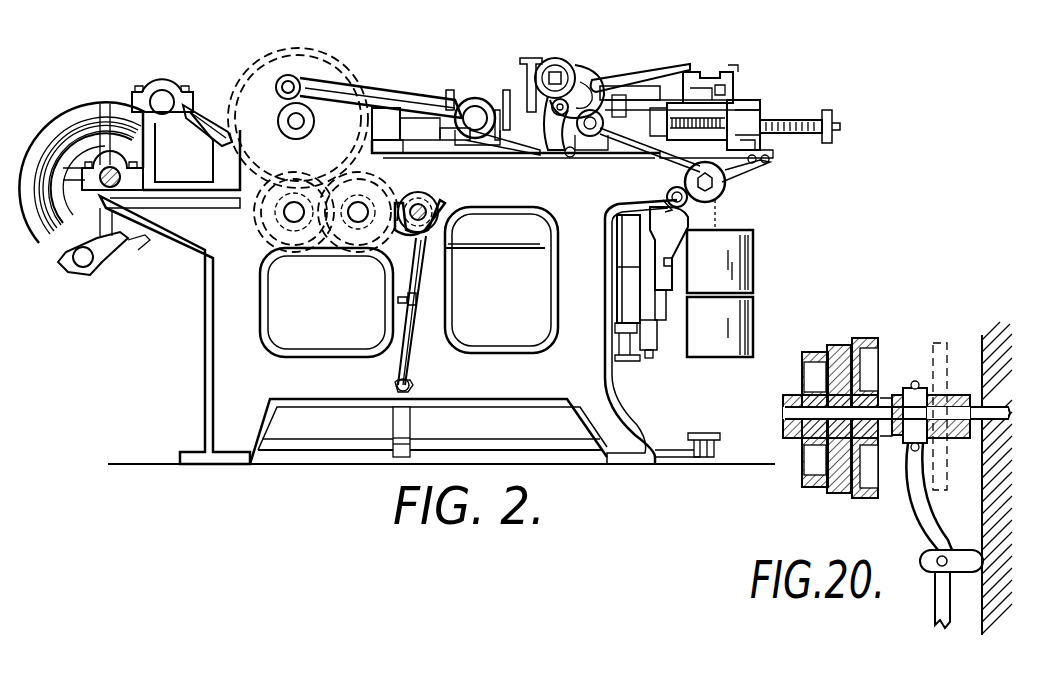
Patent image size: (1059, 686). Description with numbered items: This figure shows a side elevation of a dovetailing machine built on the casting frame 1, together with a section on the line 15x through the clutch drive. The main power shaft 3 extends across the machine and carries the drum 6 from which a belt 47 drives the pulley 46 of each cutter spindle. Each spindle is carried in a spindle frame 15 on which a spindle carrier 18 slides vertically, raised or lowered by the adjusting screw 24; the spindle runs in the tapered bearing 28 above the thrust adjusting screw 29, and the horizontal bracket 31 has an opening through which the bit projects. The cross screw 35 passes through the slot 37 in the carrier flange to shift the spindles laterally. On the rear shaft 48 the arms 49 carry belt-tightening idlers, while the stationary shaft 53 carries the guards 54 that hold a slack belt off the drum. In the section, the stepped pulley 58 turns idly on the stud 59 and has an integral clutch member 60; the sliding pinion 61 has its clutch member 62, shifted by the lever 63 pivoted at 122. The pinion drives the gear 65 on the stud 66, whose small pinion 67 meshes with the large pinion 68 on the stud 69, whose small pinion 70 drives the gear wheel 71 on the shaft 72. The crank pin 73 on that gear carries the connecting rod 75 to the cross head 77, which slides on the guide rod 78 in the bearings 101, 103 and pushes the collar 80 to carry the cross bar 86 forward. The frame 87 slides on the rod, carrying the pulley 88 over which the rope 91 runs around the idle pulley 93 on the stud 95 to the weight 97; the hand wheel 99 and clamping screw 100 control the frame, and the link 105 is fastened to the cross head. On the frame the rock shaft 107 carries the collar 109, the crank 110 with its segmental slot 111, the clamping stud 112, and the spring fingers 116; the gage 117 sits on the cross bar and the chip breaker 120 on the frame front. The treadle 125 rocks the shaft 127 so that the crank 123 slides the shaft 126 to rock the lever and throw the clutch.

In FIG. 2, the frame 1 is at (200, 300).
In FIG. 2, the main power shaft 3 is at (100, 188).
In FIG. 2, the drum 6 is at (105, 160).
In FIG. 2, the spindle frame 15 is at (622, 244).
In FIG. 2, the section line 15x is at (420, 204).
In FIG. 2, the spindle carrier 18 is at (672, 224).
In FIG. 2, the adjusting screw 24 is at (638, 361).
In FIG. 2, the tapered bearing 28 is at (654, 334).
In FIG. 2, the adjusting screw 29 is at (656, 354).
In FIG. 2, the bracket or sectional table 31 is at (668, 104).
In FIG. 2, the screw 35 is at (668, 192).
In FIG. 2, the slot 37 is at (672, 210).
In FIG. 2, the pulley 46 is at (664, 264).
In FIG. 2, the belt 47 is at (504, 247).
In FIG. 2, the shaft 48 is at (162, 98).
In FIG. 2, the arm 49 is at (215, 118).
In FIG. 2, the shaft 53 is at (84, 267).
In FIG. 2, the guard 54 is at (42, 232).
In FIG. 20, the stepped pulley 58 is at (840, 497).
In FIG. 2, the stud 59 is at (425, 212).
In FIG. 20, the stud 59 is at (1008, 410).
In FIG. 20, the clutch member 60 is at (878, 435).
In FIG. 20, the pinion 61 is at (985, 374).
In FIG. 20, the clutch member 62 is at (896, 395).
In FIG. 2, the lever 63 is at (420, 270).
In FIG. 20, the lever 63 is at (940, 589).
In FIG. 2, the gear 65 is at (362, 254).
In FIG. 20, the gear 65 is at (946, 350).
In FIG. 2, the stud 66 is at (355, 222).
In FIG. 2, the small pinion 67 is at (375, 205).
In FIG. 2, the large pinion 68 is at (256, 233).
In FIG. 2, the stud 69 is at (282, 213).
In FIG. 2, the small pinion 70 is at (294, 225).
In FIG. 2, the gear wheel 71 is at (332, 72).
In FIG. 2, the shaft 72 is at (290, 120).
In FIG. 2, the crank pin 73 is at (282, 87).
In FIG. 2, the connecting rod 75 is at (380, 100).
In FIG. 2, the cross head 77 is at (470, 104).
In FIG. 2, the sliding guide rod 78 is at (788, 120).
In FIG. 2, the collar 80 is at (506, 100).
In FIG. 2, the cross bar 86 is at (742, 100).
In FIG. 2, the frame 87 is at (615, 82).
In FIG. 2, the pulley 88 is at (592, 143).
In FIG. 2, the rope or chain 91 is at (650, 153).
In FIG. 2, the idle pulley 93 is at (722, 185).
In FIG. 2, the stud 95 is at (745, 176).
In FIG. 2, the weight 97 is at (756, 268).
In FIG. 2, the hand wheel 99 is at (448, 88).
In FIG. 2, the clamping screw 100 is at (524, 60).
In FIG. 2, the bearing 101 is at (407, 122).
In FIG. 2, the bearing 103 is at (662, 105).
In FIG. 2, the link 105 is at (491, 152).
In FIG. 2, the rock shaft 107 is at (552, 66).
In FIG. 2, the collar 109 is at (598, 78).
In FIG. 2, the crank 110 is at (557, 72).
In FIG. 2, the segmental slot 111 is at (600, 62).
In FIG. 2, the stud 112 is at (560, 136).
In FIG. 2, the spring finger 116 is at (636, 74).
In FIG. 2, the gage 117 is at (700, 72).
In FIG. 2, the chip breaker 120 is at (666, 90).
In FIG. 2, the pivot 122 is at (420, 300).
In FIG. 20, the pivot 122 is at (930, 552).
In FIG. 2, the crank 123 is at (412, 432).
In FIG. 2, the treadle 125 is at (705, 432).
In FIG. 2, the shaft 126 is at (412, 386).
In FIG. 2, the shaft 127 is at (496, 452).